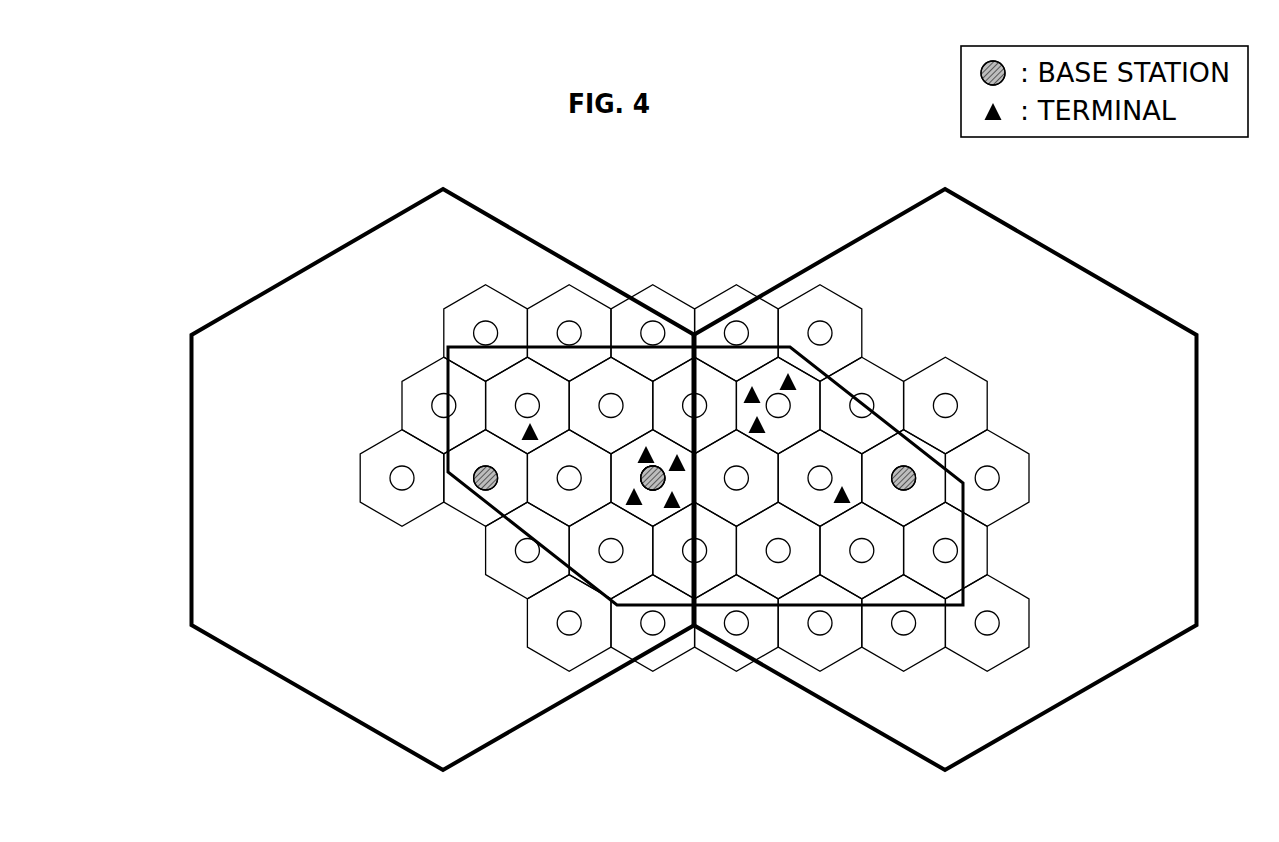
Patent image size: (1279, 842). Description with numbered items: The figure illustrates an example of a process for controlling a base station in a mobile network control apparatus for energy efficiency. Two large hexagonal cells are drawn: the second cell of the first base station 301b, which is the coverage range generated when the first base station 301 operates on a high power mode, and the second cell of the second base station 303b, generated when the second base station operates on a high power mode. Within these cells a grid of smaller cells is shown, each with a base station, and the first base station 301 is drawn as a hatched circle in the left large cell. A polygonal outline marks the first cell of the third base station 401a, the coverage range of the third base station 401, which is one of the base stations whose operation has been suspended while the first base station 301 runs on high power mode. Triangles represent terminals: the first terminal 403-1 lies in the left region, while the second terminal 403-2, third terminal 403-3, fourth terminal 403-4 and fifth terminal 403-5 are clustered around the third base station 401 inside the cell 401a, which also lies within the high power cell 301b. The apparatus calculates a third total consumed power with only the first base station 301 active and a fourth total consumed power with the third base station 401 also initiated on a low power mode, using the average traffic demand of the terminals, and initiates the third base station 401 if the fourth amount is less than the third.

The first base station 301 is at (483, 478).
The second cell_#1 301b is at (522, 234).
The second cell_#2 303b is at (1025, 236).
The third base station 401 is at (650, 491).
The first cell_#3 401a is at (645, 490).
The first terminal 403-1 is at (528, 430).
The second terminal 403-2 is at (645, 452).
The third terminal 403-3 is at (683, 458).
The fourth terminal 403-4 is at (671, 510).
The fifth terminal 403-5 is at (628, 497).